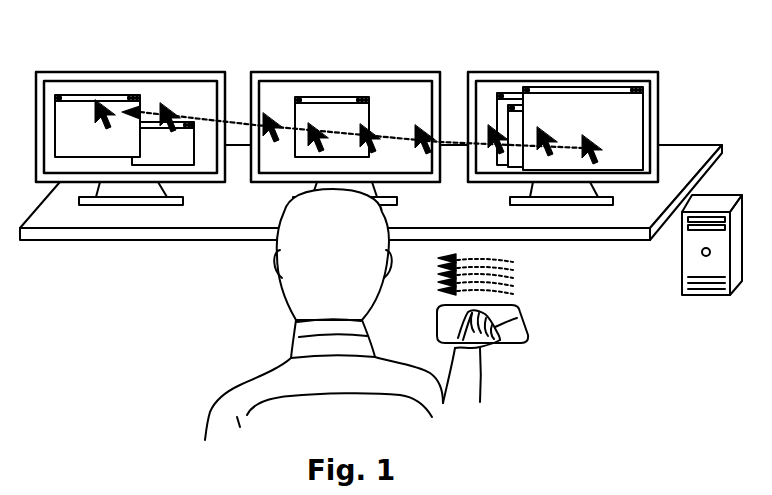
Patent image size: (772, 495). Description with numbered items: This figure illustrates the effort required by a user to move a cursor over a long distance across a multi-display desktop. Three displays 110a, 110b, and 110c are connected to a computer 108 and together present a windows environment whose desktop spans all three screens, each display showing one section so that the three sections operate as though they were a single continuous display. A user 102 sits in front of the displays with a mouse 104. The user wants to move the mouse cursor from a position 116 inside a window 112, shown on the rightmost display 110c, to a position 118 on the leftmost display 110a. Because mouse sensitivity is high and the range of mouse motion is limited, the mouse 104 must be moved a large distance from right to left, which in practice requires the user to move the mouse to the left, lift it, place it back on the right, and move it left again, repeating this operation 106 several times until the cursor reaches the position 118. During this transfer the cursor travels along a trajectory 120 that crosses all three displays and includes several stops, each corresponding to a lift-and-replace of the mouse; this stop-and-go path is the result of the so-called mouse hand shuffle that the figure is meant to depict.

The user 102 is at (230, 398).
The mouse 104 is at (512, 319).
The operation 106 is at (528, 281).
The computer 108 is at (703, 295).
The display 110a is at (198, 96).
The display 110b is at (273, 96).
The display 110c is at (562, 115).
The window 112 is at (613, 90).
The position 116 is at (585, 137).
The position 118 is at (97, 100).
The trajectory 120 is at (240, 125).